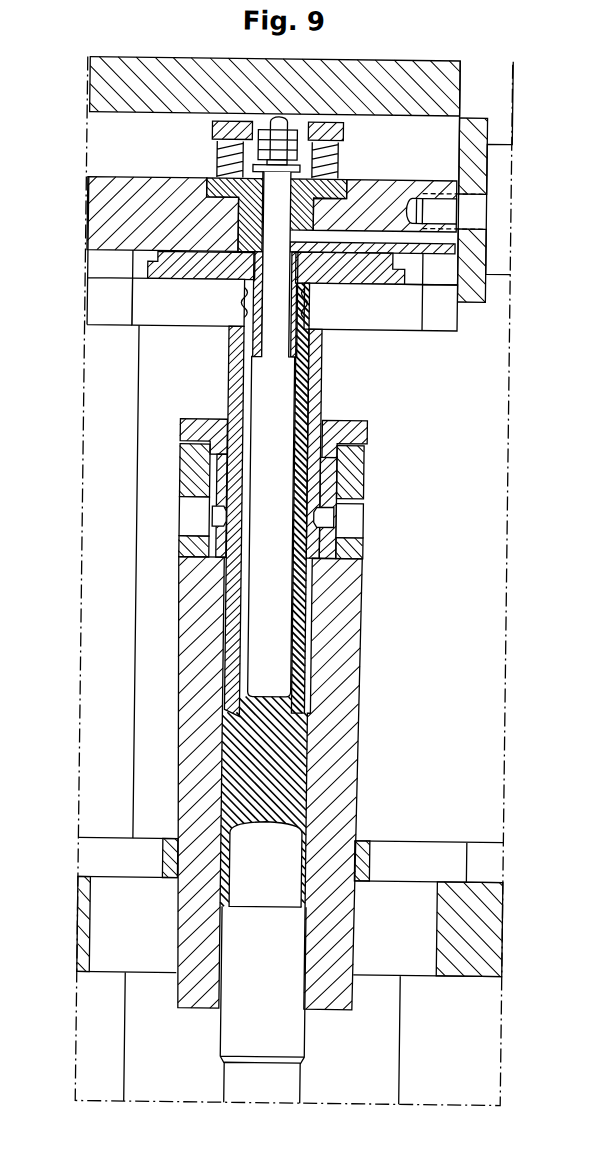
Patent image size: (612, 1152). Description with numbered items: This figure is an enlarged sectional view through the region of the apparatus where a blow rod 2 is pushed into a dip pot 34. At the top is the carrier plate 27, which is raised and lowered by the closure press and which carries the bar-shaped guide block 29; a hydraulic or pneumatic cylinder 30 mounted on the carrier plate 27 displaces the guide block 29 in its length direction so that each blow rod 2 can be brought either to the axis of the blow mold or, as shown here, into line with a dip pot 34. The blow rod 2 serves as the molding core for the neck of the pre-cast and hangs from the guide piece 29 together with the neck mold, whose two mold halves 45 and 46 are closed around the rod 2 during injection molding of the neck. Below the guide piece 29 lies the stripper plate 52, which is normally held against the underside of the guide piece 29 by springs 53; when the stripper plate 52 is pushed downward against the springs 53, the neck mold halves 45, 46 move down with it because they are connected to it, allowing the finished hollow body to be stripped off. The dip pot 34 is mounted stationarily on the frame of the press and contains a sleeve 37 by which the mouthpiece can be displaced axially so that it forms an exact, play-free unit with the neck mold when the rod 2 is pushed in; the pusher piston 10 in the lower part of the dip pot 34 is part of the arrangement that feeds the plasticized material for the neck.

The carrier plate 27 is at (101, 76).
The guide block 29 is at (392, 188).
The hydraulic or pneumatic cylinder 30 is at (498, 196).
The springs 53 is at (212, 160).
The stripper plate 52 is at (366, 282).
The mold half 45 is at (177, 316).
The mold half 46 is at (335, 316).
The blow rod 2 is at (264, 415).
The sleeve 37 is at (333, 592).
The dip pot 34 is at (349, 636).
The pusher piston 10 is at (258, 880).